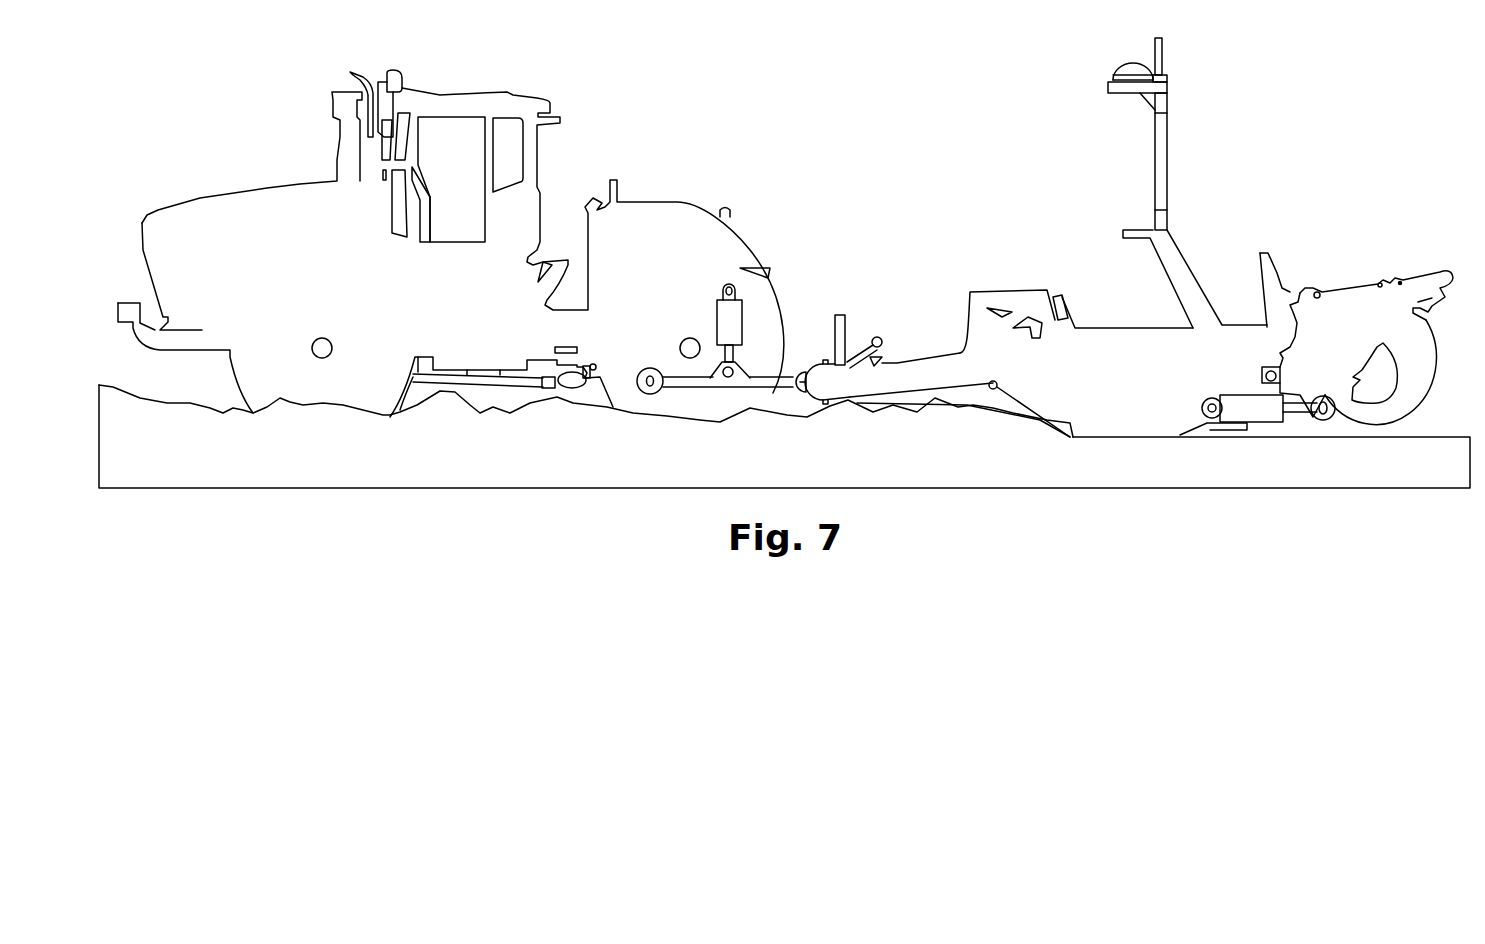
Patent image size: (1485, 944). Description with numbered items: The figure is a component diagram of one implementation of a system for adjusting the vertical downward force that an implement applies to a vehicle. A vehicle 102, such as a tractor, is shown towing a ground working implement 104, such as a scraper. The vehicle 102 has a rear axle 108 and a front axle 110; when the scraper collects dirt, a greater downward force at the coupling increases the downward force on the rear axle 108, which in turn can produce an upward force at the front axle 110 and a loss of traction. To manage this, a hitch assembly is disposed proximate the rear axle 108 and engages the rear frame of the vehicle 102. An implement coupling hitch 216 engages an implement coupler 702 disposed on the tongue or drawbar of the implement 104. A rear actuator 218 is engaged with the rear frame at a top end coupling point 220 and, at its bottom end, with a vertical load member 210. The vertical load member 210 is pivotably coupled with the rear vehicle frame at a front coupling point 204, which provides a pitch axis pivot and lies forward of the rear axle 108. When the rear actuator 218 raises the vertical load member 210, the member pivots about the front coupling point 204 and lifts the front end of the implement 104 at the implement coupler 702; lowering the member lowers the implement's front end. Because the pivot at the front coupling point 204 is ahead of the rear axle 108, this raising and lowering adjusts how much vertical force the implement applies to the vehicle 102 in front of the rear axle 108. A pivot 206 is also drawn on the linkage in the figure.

The vehicle 102 is at (581, 153).
The ground working implement 104 is at (1098, 283).
The rear axle 108 is at (666, 332).
The front axle 110 is at (307, 323).
The front coupling point 204 is at (639, 360).
The pivot pin 206 is at (736, 403).
The vertical load member 210 is at (683, 411).
The implement coupling hitch 216 is at (821, 327).
The rear actuator 218 is at (768, 287).
The top end coupling point 220 is at (720, 267).
The implement coupler 702 is at (843, 426).